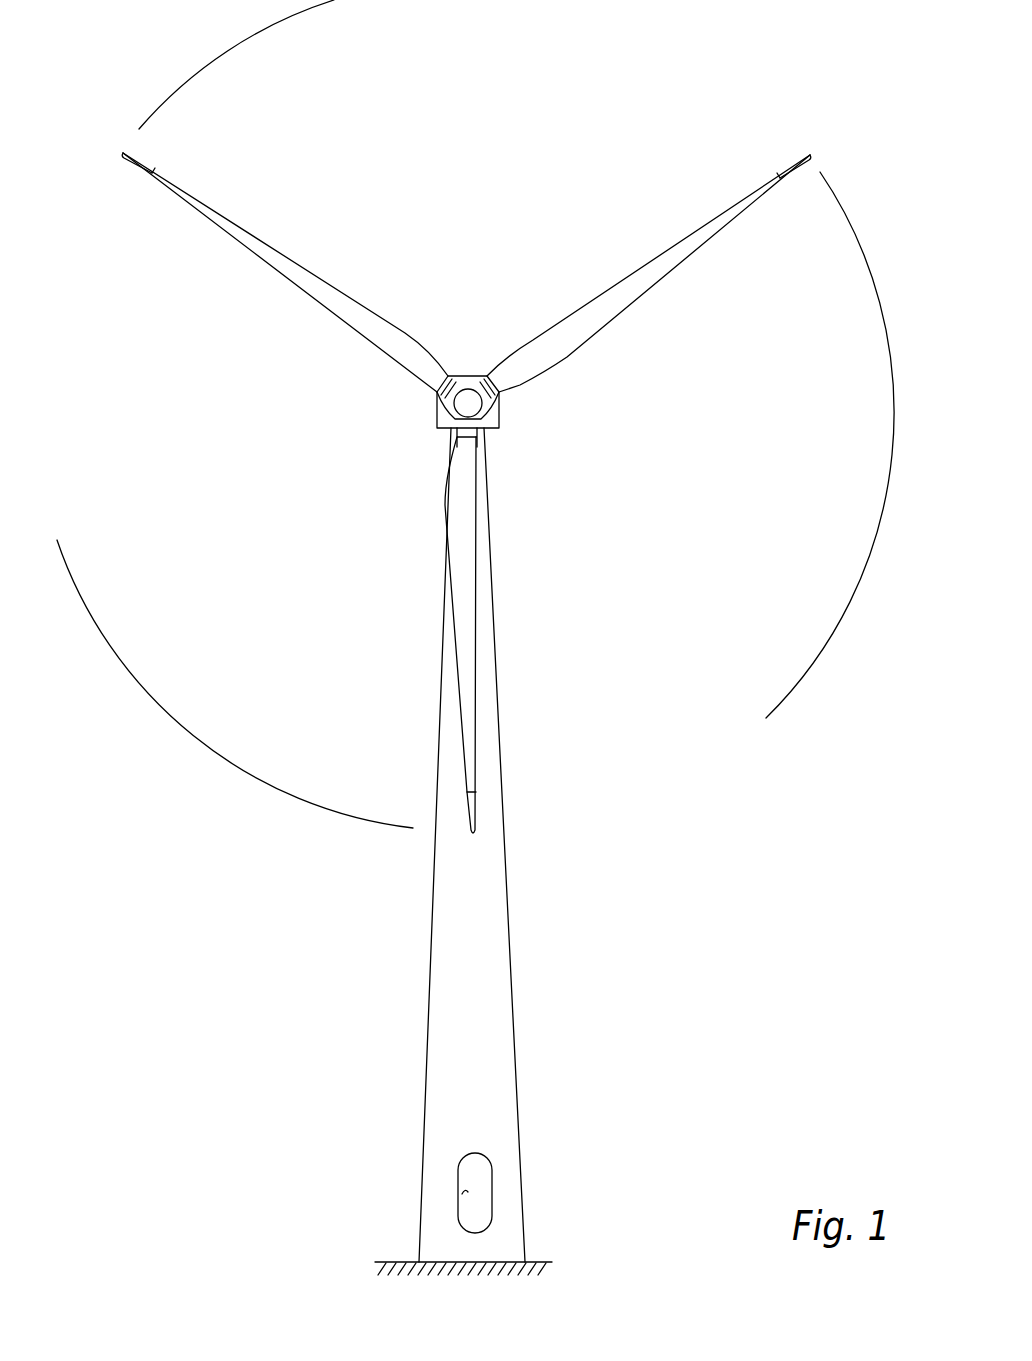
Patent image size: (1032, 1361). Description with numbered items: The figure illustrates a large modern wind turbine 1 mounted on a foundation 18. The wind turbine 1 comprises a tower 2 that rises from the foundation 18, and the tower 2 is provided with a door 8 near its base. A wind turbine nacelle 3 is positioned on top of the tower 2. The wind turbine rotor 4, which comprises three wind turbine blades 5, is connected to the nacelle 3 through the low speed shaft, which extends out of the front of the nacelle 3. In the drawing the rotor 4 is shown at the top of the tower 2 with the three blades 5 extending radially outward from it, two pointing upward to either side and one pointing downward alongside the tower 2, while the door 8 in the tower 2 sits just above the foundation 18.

The wind turbine 1 is at (475, 637).
The tower 2 is at (502, 933).
The wind turbine nacelle 3 is at (499, 430).
The wind turbine rotor 4 is at (443, 400).
The wind turbine blades 5 is at (470, 673).
The door 8 is at (485, 1195).
The foundation 18 is at (415, 1262).